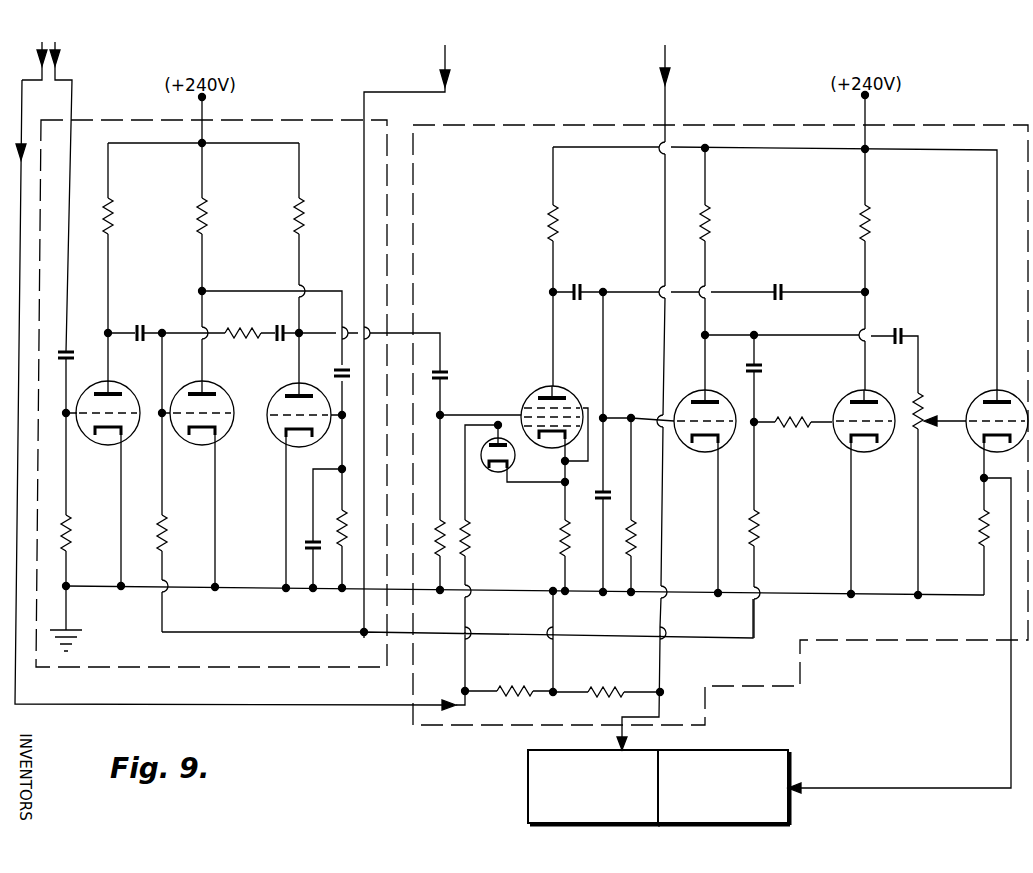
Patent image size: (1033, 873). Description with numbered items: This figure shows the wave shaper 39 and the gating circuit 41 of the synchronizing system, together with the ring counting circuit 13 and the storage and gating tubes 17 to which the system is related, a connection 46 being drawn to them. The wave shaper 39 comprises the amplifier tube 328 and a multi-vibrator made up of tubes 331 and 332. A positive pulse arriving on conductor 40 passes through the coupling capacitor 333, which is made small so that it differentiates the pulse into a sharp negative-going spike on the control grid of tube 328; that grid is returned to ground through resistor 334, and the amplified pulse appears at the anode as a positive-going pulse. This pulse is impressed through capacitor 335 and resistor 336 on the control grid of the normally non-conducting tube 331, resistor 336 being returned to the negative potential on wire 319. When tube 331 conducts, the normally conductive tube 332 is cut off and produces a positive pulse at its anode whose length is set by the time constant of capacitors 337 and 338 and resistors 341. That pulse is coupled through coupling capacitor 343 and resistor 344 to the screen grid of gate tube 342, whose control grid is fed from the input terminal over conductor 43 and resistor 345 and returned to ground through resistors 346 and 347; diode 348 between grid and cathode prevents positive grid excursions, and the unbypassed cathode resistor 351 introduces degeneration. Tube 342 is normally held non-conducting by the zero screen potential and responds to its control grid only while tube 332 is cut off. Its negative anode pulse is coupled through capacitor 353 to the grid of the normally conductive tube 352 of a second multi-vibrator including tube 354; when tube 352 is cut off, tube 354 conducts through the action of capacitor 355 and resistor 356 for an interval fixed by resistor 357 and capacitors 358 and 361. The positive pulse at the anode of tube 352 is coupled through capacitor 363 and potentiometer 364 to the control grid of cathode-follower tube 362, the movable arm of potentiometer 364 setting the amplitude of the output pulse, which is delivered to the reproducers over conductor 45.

The ring counting circuit 13 is at (587, 813).
The storage and gating tubes 17 is at (713, 813).
The wave shaper 39 is at (294, 120).
The conductor 40 is at (55, 86).
The gating circuit 41 is at (769, 129).
The conductor 43 is at (227, 705).
The conductor 45 is at (870, 788).
The input lead 46 is at (670, 86).
The wire 319 is at (448, 92).
The amplifier tube 328 is at (112, 449).
The tube 331 is at (235, 393).
The tube 332 is at (284, 386).
The coupling capacitor 333 is at (72, 352).
The resistor 334 is at (70, 548).
The capacitor 335 is at (150, 319).
The resistor 336 is at (167, 548).
The capacitor 337 is at (331, 372).
The capacitor 338 is at (303, 546).
The resistors 341 is at (339, 510).
The gate tube 342 is at (520, 401).
The coupling capacitor 343 is at (447, 377).
The resistor 344 is at (438, 519).
The resistor 345 is at (469, 553).
The resistor 346 is at (495, 688).
The resistor 347 is at (561, 684).
The diode 348 is at (513, 460).
The resistor 351 is at (560, 547).
The tube 352 is at (696, 451).
The capacitor 353 is at (579, 282).
The tube 354 is at (841, 446).
The capacitor 355 is at (766, 368).
The resistor 356 is at (794, 418).
The resistor 357 is at (630, 530).
The capacitor 358 is at (787, 285).
The capacitor 361 is at (568, 533).
The cathode-follower tube 362 is at (968, 395).
The capacitor 363 is at (898, 328).
The potentiometer 364 is at (920, 435).